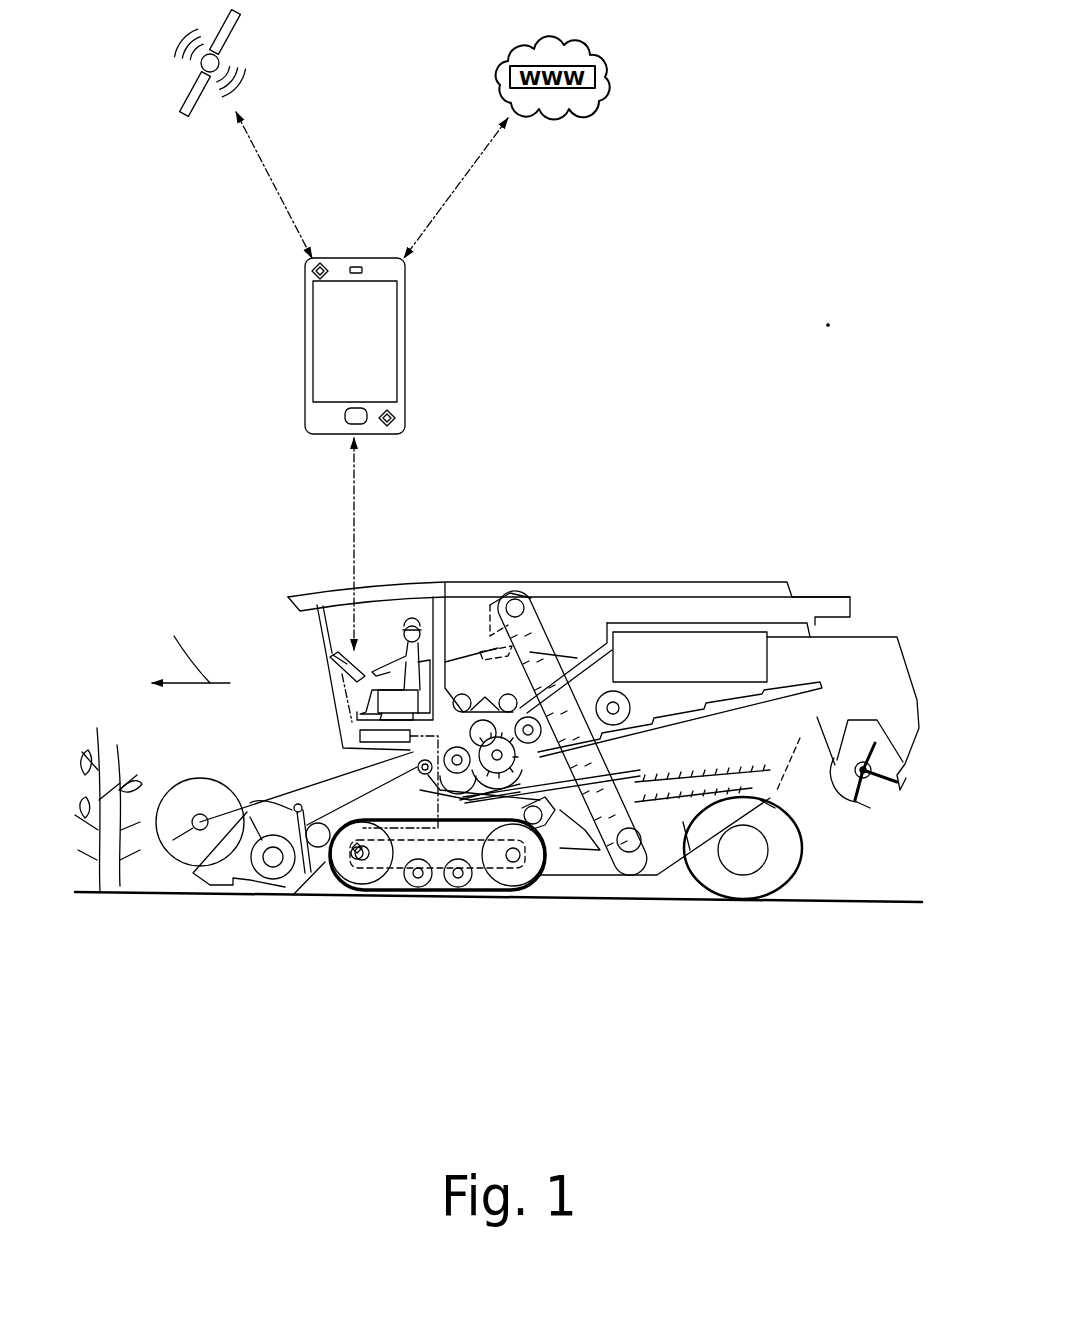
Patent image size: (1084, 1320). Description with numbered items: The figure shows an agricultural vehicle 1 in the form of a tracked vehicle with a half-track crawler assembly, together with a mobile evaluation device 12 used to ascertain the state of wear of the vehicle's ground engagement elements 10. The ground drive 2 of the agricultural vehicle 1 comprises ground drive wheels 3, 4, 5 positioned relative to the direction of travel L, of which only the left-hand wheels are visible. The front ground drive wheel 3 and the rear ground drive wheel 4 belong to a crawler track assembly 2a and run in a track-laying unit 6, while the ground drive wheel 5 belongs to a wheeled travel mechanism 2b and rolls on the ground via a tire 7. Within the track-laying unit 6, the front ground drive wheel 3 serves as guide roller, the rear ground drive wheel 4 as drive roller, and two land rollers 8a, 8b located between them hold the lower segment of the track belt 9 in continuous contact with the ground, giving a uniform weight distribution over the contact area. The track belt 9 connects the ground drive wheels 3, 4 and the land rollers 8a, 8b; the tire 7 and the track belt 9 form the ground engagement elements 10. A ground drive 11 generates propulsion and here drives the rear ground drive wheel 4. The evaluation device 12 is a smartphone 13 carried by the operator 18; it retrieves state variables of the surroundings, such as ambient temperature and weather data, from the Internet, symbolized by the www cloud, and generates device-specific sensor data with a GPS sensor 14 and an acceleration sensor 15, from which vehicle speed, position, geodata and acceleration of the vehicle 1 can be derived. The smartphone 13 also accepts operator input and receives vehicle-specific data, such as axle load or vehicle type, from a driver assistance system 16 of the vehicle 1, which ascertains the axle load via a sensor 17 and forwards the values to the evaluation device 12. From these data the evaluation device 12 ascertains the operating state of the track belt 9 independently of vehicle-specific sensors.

The agricultural vehicle 1 is at (735, 476).
The ground drive 2 is at (594, 843).
The crawler track assembly 2a is at (408, 912).
The wheeled travel mechanism 2b is at (698, 914).
The front ground drive wheel 3 is at (426, 858).
The rear ground drive wheel 4 is at (498, 896).
The ground drive wheel 5 is at (754, 895).
The track-laying unit 6 is at (544, 897).
The tire 7 is at (771, 894).
The land wheel or land roller 8a is at (405, 888).
The land wheel or land roller 8b is at (456, 898).
The track belt 9 is at (268, 893).
The ground engagement element 10 is at (737, 862).
The ground drive 11 is at (740, 650).
The evaluation device 12 is at (398, 342).
The smartphone 13 is at (309, 349).
The GPS sensor 14 is at (311, 270).
The acceleration sensor 15 is at (396, 415).
The driver assistance system 16 is at (328, 657).
The sensor 17 is at (358, 842).
The operator 18 is at (416, 627).